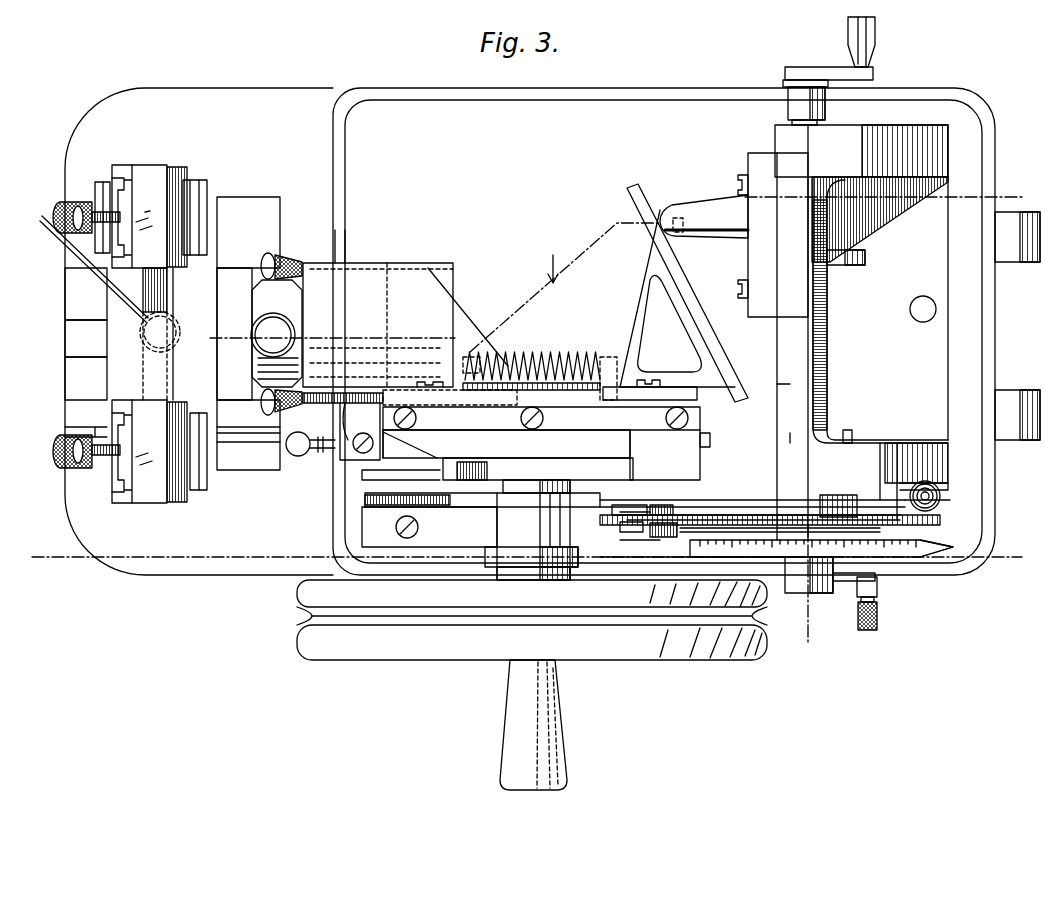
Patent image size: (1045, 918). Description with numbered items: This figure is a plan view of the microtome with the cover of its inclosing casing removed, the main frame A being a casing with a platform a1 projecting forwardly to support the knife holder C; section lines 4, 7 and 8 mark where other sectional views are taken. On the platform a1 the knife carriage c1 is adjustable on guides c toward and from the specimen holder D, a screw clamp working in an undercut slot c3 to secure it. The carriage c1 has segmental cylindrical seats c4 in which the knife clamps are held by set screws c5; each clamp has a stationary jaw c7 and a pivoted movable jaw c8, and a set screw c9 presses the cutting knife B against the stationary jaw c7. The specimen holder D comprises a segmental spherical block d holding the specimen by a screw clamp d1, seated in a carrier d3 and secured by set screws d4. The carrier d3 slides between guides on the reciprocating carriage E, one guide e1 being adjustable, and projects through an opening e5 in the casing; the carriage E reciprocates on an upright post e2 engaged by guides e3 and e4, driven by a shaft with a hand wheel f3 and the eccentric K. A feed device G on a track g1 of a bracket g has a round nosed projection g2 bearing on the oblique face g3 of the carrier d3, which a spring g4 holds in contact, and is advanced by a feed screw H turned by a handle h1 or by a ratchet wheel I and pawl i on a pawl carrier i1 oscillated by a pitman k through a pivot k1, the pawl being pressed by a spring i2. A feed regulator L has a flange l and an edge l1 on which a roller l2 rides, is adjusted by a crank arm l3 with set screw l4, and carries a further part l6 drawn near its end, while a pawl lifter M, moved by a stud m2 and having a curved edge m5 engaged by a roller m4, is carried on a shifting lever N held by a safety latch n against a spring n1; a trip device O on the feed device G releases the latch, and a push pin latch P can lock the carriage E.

The platform a1 is at (199, 331).
The main frame A is at (686, 331).
The section line 4- 4 is at (526, 558).
The section line 7- 7 is at (624, 266).
The movable jaw c8 is at (139, 334).
The stationary jaw c7 is at (183, 165).
The knife holder C is at (202, 182).
The knife clamp seats c4 is at (205, 500).
The set screws c5 is at (58, 207).
The set screw c9 is at (65, 250).
The cutting knife B is at (173, 293).
The undercut slot c3 is at (86, 312).
The knife carriage c1 is at (172, 298).
The guide c is at (172, 435).
The segmental spherical block d is at (250, 377).
The screw clamp d1 is at (273, 335).
The set screws d4 is at (285, 265).
The opening e5 is at (347, 258).
The specimen holder D is at (410, 334).
The carrier d3 is at (565, 287).
The spring g4 is at (563, 357).
The reciprocating carriage E is at (541, 409).
The guide e3 is at (425, 452).
The upright post e2 is at (508, 455).
The guide e4 is at (658, 455).
The adjustable guide e1 is at (663, 385).
The locking latch P is at (323, 457).
The eccentric K is at (447, 508).
The hand wheel f3 is at (532, 635).
The crank handle h1 is at (873, 62).
The bracket g is at (861, 332).
The feed device G is at (763, 235).
The round nosed projection g2 is at (704, 216).
The oblique rear end face g3 is at (688, 293).
The guide track g1 is at (777, 385).
The feed screw H is at (828, 363).
The safety trip device O is at (852, 265).
The section line 8- 8 is at (807, 440).
The safety latch n is at (853, 435).
The shifting lever N is at (890, 493).
The spring n1 is at (940, 492).
The ratchet wheel I is at (948, 522).
The pawl carrier i1 is at (698, 500).
The pitman k is at (717, 500).
The pivot k1 is at (733, 500).
The antifriction roller m4 is at (665, 505).
The curved edge m5 is at (783, 513).
The stud m2 is at (820, 505).
The pawl lifter M is at (867, 510).
The spring i2 is at (622, 515).
The antifriction roller l2 is at (653, 528).
The pawl i is at (629, 529).
The segmental circular edge l1 is at (687, 535).
The segmental circular flange l is at (780, 527).
The feed regulator L is at (821, 558).
The crank arm l3 is at (878, 590).
The set screw l4 is at (854, 617).
The pointer l6 is at (932, 550).